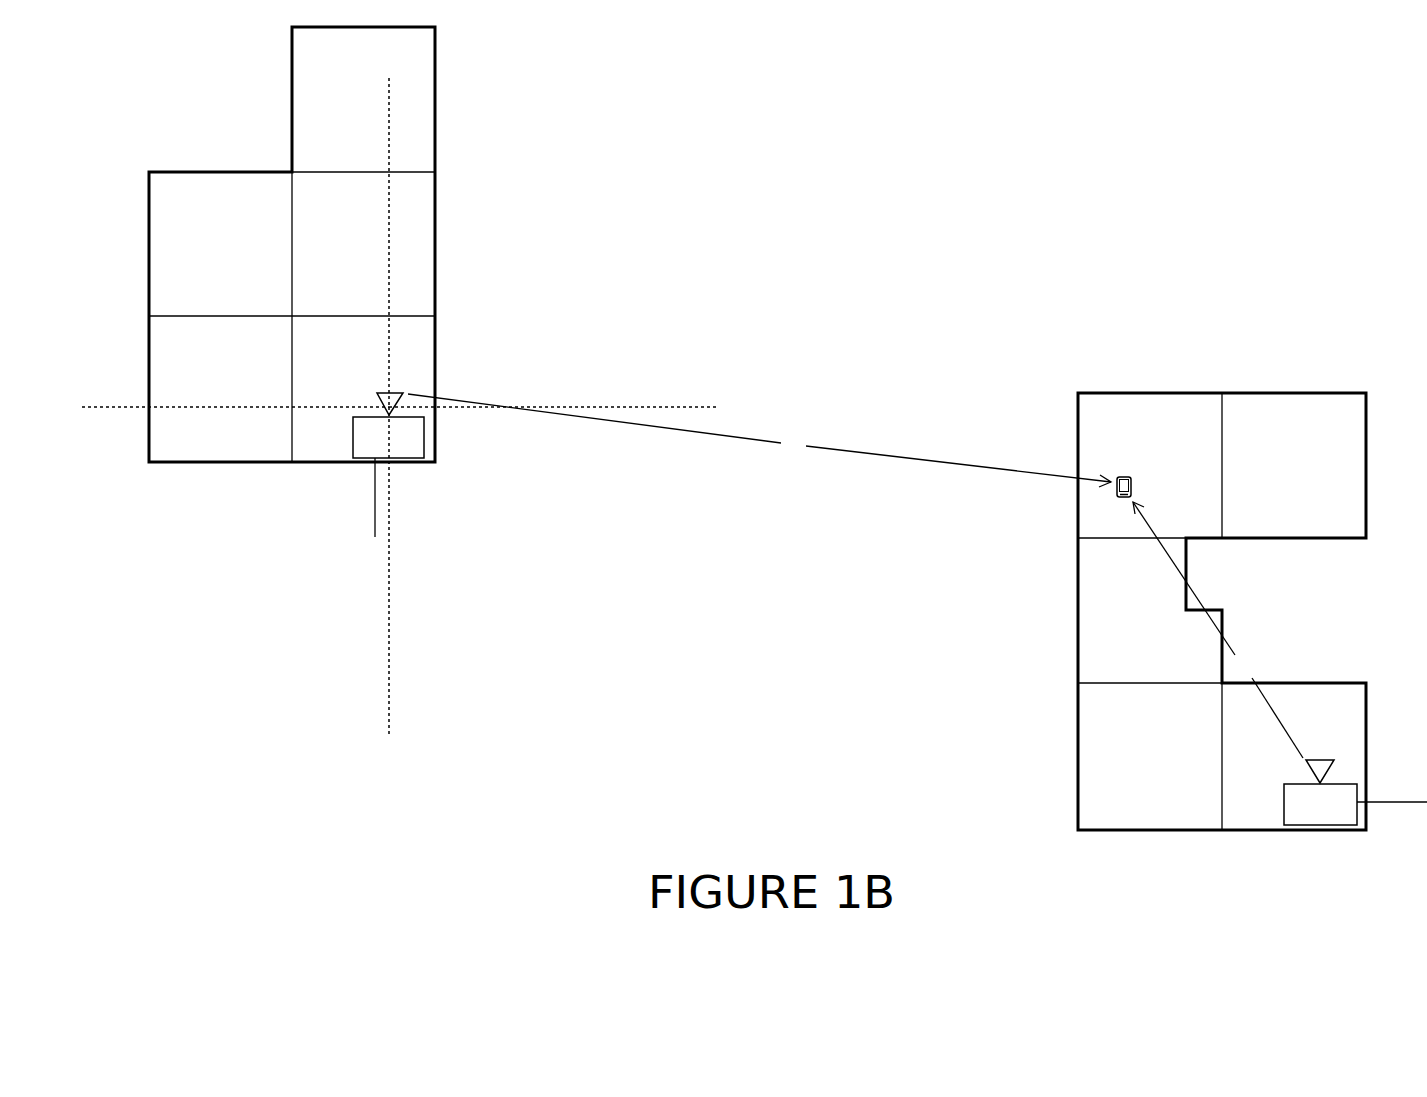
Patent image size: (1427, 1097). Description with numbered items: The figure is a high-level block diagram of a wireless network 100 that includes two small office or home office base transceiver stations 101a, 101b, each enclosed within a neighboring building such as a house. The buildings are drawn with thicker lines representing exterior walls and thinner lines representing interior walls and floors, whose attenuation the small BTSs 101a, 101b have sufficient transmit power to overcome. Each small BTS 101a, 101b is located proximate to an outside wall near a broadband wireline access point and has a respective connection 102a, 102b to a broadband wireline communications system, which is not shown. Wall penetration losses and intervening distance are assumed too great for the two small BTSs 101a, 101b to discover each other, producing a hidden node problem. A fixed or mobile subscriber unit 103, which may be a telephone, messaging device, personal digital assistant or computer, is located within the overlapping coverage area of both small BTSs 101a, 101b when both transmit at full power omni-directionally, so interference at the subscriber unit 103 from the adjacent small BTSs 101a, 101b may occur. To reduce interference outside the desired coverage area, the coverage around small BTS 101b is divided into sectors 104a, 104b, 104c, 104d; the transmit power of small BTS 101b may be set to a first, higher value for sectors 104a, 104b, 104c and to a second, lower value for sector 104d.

The wireless network 100 is at (815, 770).
The small office/home office base transceiver station 101a is at (1319, 828).
The small office/home office base transceiver station 101b is at (368, 417).
The connection 102a is at (1388, 798).
The connection 102b is at (375, 500).
The subscriber unit 103 is at (1125, 469).
The sector 104a is at (608, 300).
The sector 104b is at (247, 123).
The sector 104c is at (246, 535).
The sector 104d is at (598, 538).